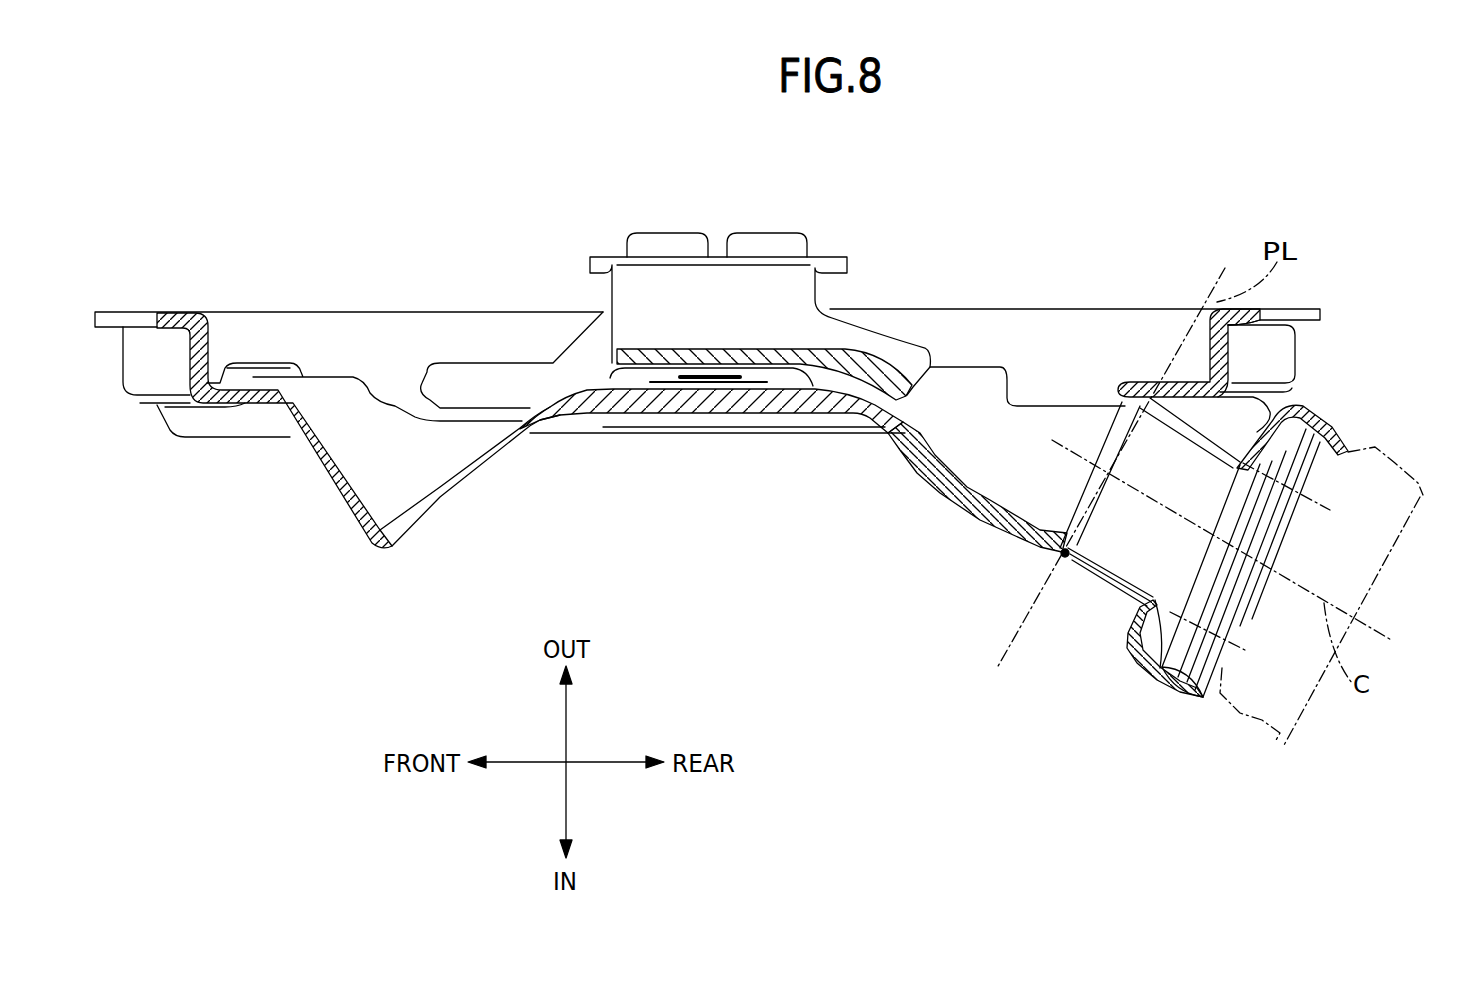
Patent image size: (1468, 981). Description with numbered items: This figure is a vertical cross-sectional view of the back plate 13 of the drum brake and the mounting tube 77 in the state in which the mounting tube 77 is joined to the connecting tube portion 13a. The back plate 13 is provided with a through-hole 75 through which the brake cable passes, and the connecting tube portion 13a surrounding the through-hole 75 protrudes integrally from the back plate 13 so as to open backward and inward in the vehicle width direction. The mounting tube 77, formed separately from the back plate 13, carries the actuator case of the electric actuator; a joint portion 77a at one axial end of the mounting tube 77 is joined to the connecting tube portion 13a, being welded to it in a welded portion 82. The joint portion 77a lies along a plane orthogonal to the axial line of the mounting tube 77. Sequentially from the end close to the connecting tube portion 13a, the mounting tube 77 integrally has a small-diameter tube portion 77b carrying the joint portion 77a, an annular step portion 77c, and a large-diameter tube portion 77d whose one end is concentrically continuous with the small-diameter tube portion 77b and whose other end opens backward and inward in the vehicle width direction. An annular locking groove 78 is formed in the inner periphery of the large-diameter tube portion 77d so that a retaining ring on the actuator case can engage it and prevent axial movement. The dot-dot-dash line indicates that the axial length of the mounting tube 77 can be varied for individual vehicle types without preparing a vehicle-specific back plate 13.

The back plate 13 is at (727, 412).
The connecting tube portion 13a is at (963, 493).
The through-hole 75 is at (1145, 398).
The mounting tube 77 is at (1198, 533).
The joint portion 77a is at (1122, 408).
The small-diameter tube portion 77b is at (1110, 570).
The annular step portion 77c is at (1150, 663).
The large-diameter tube portion 77d is at (1183, 693).
The annular locking groove 78 is at (1303, 430).
The welded portion 82 is at (1058, 556).